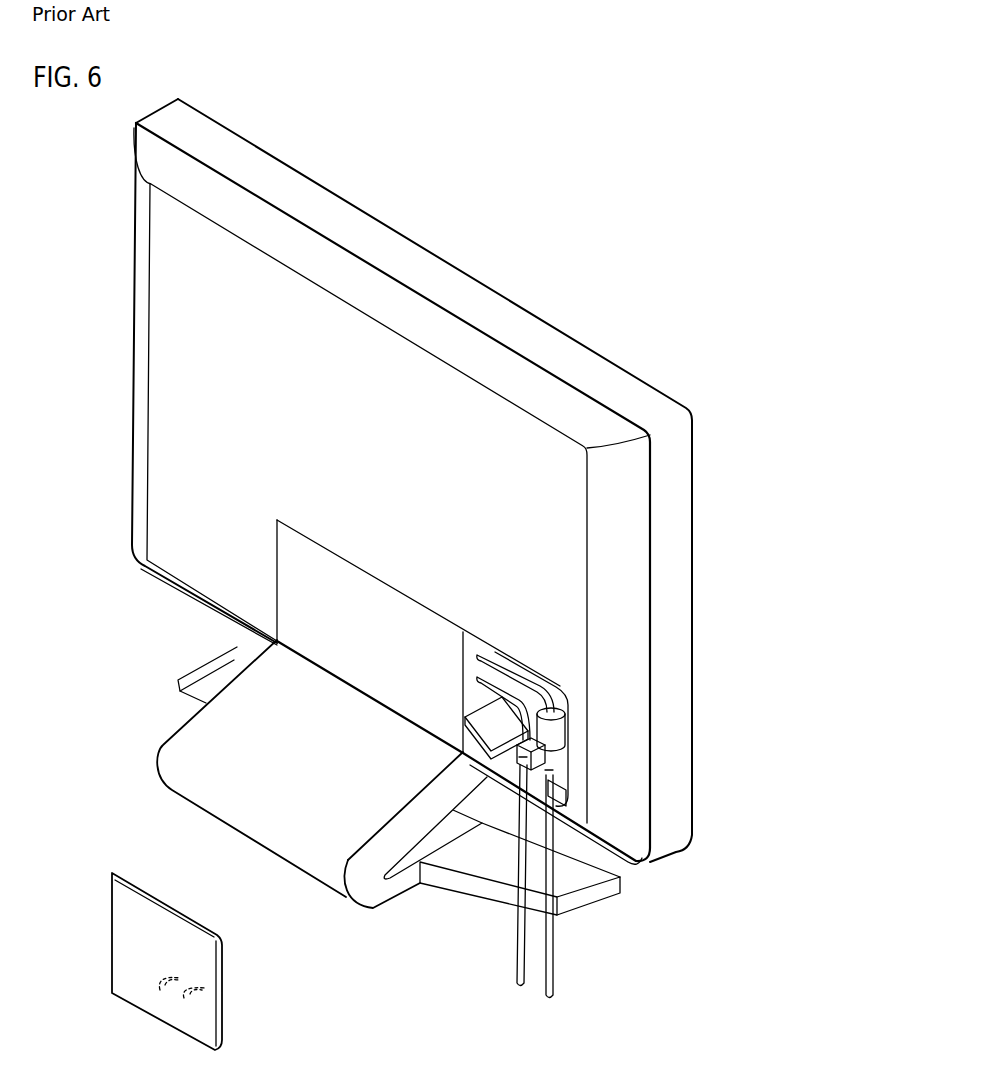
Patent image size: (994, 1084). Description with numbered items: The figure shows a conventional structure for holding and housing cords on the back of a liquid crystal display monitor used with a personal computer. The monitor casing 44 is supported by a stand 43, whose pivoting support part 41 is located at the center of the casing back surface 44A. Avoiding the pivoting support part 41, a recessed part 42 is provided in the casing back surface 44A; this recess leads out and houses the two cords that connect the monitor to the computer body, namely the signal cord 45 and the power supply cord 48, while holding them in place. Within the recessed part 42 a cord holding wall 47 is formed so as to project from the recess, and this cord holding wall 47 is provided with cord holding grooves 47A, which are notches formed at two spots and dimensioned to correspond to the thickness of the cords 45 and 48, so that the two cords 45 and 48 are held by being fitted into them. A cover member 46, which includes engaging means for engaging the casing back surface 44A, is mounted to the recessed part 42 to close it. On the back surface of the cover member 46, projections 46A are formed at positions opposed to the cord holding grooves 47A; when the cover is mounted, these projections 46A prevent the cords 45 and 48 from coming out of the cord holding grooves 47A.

The pivoting support part 41 is at (320, 628).
The recessed part 42 is at (530, 677).
The stand 43 is at (223, 783).
The casing 44 is at (672, 475).
The casing back surface 44A is at (547, 462).
The signal cord 45 is at (522, 922).
The cover member 46 is at (148, 955).
The projections 46A is at (183, 977).
The cord holding wall 47 is at (562, 758).
The cord holding grooves 47A is at (547, 802).
The power supply cord 48 is at (552, 947).